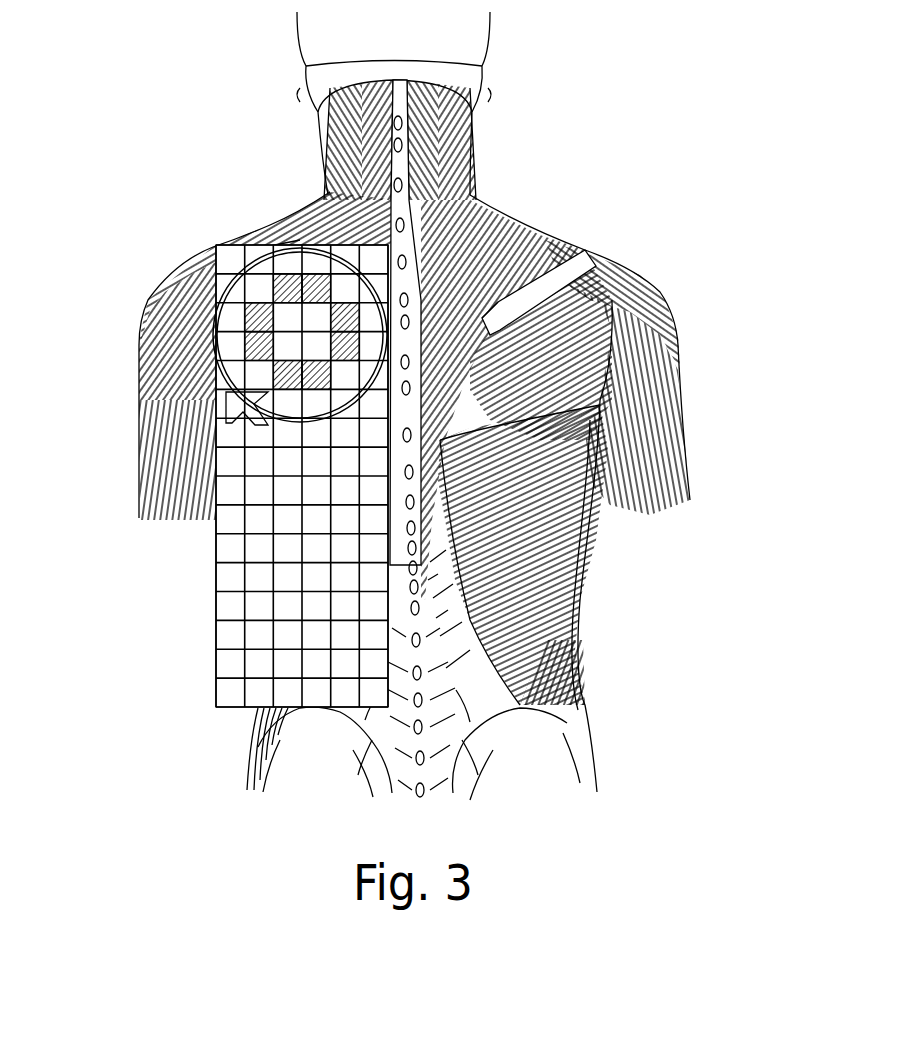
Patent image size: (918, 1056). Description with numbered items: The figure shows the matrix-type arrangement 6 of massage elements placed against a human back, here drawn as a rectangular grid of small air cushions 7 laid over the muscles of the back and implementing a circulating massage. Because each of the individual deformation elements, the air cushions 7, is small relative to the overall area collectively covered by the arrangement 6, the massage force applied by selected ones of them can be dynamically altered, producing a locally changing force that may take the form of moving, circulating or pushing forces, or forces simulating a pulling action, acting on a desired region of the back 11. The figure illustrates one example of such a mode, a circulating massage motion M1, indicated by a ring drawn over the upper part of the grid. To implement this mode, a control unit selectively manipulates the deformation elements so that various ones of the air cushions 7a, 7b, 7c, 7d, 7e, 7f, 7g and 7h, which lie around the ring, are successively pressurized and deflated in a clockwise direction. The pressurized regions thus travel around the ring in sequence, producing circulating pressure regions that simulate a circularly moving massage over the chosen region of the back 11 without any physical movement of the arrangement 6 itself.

The arrangement 6 is at (414, 406).
The circulating massage motion M1 is at (252, 250).
The air cushions 7 is at (409, 410).
The air cushion 7a is at (291, 273).
The air cushion 7b is at (317, 273).
The air cushion 7c is at (368, 320).
The air cushion 7d is at (368, 345).
The air cushion 7e is at (318, 403).
The air cushion 7f is at (290, 403).
The air cushion 7g is at (235, 347).
The air cushion 7h is at (235, 318).
The region of the back 11 is at (490, 285).